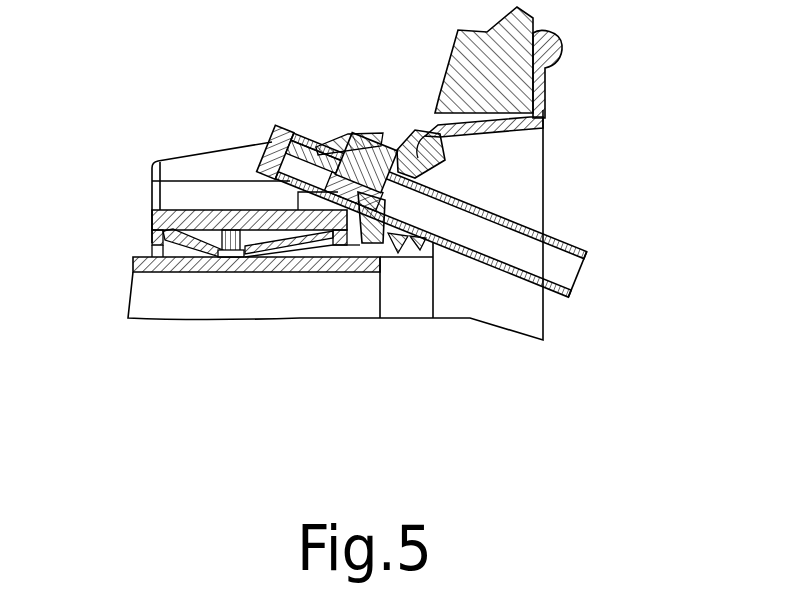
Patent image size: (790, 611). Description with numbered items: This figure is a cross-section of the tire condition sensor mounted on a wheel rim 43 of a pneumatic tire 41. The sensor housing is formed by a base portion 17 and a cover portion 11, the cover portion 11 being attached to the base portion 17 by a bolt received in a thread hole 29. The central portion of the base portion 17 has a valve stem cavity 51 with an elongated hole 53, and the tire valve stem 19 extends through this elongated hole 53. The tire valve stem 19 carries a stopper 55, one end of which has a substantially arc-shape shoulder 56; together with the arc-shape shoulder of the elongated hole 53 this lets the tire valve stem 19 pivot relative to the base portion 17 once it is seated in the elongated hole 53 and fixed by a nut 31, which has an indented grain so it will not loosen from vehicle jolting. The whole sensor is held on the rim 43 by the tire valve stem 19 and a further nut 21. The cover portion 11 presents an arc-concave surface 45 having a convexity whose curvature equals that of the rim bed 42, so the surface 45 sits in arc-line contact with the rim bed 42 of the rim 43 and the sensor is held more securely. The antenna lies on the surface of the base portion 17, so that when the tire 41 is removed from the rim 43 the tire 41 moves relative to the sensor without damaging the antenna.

The cover portion 11 is at (188, 248).
The base portion 17 is at (177, 195).
The tire valve stem 19 is at (567, 243).
The nut 21 is at (437, 145).
The thread hole 29 is at (233, 227).
The nut 31 is at (294, 126).
The tire 41 is at (460, 62).
The rim bed 42 is at (145, 268).
The rim 43 is at (543, 92).
The arc-concave surface 45 is at (252, 250).
The valve stem cavity 51 is at (248, 200).
The elongated hole 53 is at (305, 137).
The stopper 55 is at (360, 240).
The arc-shape shoulder 56 is at (343, 250).